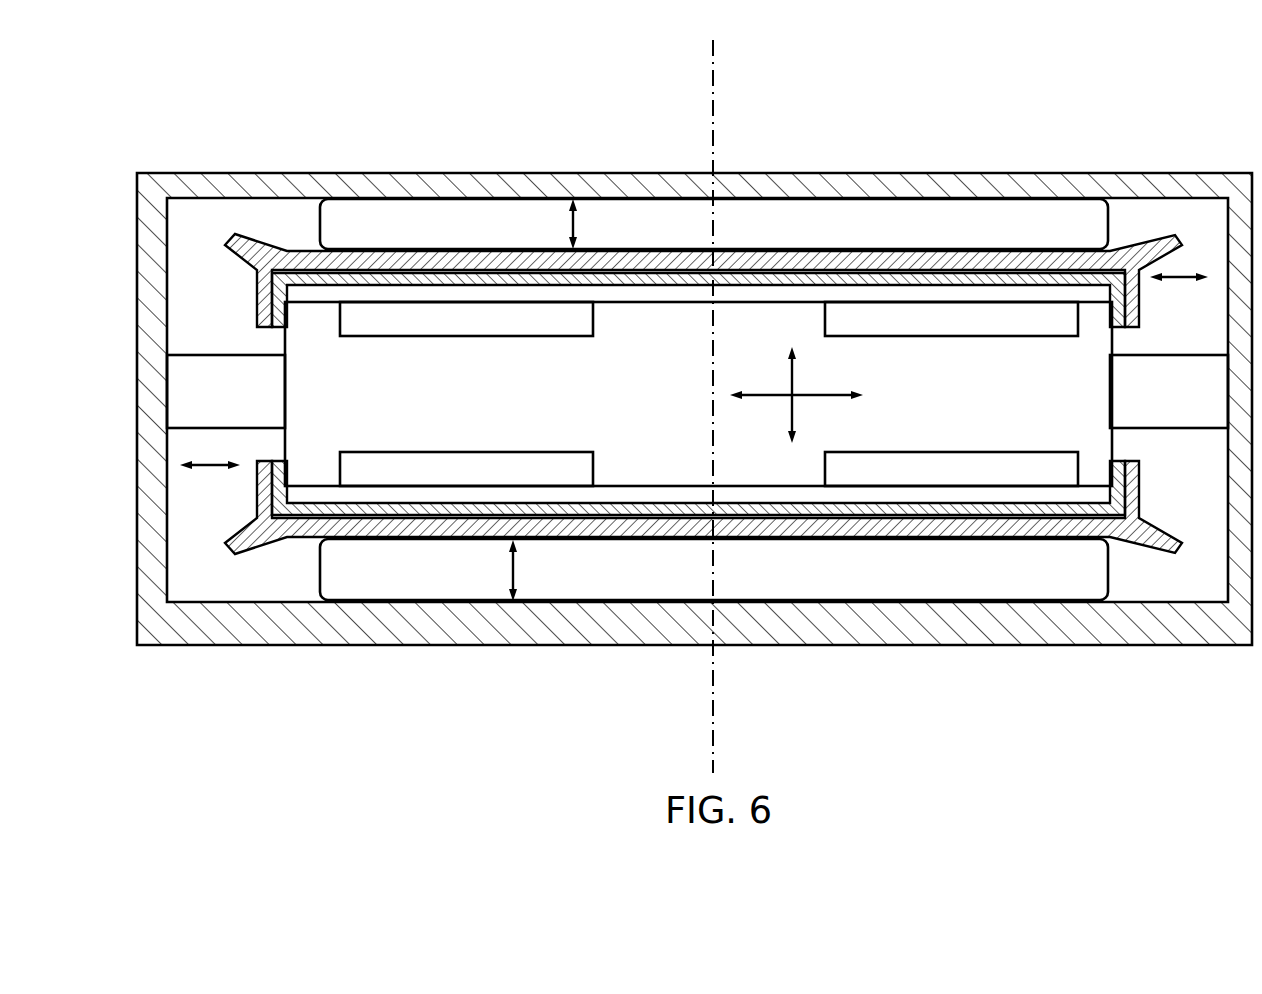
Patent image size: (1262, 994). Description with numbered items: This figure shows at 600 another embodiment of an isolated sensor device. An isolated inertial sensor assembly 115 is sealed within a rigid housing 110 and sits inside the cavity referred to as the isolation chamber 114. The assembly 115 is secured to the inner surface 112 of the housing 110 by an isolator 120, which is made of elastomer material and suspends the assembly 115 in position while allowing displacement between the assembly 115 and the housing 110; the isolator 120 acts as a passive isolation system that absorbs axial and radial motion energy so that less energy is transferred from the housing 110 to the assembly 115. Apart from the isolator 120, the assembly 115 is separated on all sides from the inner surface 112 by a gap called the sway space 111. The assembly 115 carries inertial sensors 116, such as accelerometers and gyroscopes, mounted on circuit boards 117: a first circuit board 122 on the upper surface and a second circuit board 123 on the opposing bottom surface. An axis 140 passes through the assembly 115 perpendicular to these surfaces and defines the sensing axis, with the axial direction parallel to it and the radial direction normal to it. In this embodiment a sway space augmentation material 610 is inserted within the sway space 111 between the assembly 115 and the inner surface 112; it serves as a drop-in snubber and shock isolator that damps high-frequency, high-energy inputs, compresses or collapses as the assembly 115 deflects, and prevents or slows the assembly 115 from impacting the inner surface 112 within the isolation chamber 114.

The isolated sensor device embodiment 600 is at (237, 131).
The rigid housing 110 is at (694, 398).
The inner surface 112 is at (1198, 200).
The sway space 111 is at (572, 224).
The isolation chamber 114 is at (193, 262).
The axis 140 is at (712, 115).
The sway space augmentation material 610 is at (885, 212).
The isolator 120 is at (210, 355).
The inertial sensors 116 is at (490, 334).
The isolated inertial sensor assembly 115 is at (491, 409).
The circuit board 117 is at (752, 303).
The first circuit board 122 is at (655, 308).
The second circuit board 123 is at (657, 483).